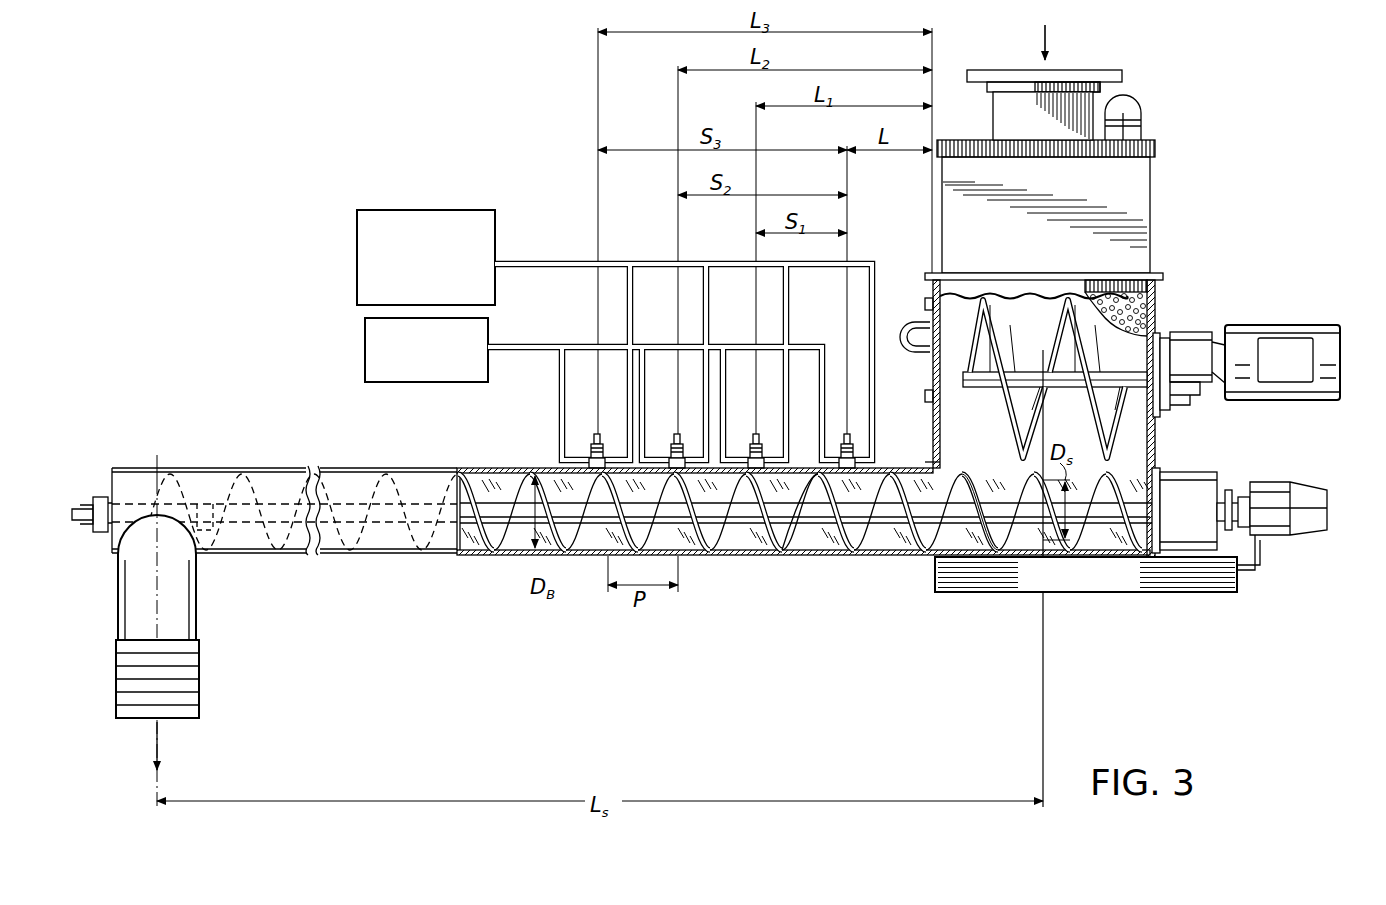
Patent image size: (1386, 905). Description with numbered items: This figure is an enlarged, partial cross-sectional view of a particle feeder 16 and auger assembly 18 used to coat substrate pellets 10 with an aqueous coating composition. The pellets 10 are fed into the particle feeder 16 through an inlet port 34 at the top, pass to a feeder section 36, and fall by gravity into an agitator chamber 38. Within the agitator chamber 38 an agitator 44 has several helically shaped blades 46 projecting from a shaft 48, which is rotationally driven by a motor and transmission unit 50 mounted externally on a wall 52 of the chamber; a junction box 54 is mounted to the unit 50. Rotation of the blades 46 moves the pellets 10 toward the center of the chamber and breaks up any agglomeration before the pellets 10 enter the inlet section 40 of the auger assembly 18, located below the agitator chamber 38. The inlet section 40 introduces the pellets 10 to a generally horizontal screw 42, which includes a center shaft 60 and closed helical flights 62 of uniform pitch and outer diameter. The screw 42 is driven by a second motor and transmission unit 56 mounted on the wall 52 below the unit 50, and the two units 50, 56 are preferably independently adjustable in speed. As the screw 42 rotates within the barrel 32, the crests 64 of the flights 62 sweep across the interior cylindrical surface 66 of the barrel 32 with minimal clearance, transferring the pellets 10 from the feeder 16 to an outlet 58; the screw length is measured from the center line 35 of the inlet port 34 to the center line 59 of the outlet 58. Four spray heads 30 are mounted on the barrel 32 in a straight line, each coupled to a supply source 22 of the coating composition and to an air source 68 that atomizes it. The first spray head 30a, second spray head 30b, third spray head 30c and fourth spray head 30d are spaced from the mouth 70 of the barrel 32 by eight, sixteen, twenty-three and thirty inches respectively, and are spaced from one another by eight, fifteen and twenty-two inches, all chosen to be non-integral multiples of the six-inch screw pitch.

The substrate pellets 10 is at (1152, 303).
The substrate pellet feeder 16 is at (1068, 291).
The auger assembly 18 is at (807, 524).
The supply source of the aqueous coating composition 22 is at (400, 210).
The spray heads 30 is at (680, 424).
The first spray head 30a is at (850, 440).
The second spray head 30b is at (759, 440).
The third spray head 30c is at (680, 440).
The fourth spray head 30d is at (600, 440).
The barrel 32 is at (396, 466).
The inlet port 34 is at (1064, 71).
The center line of the inlet port 35 is at (1043, 690).
The feeder section 36 is at (1064, 192).
The agitator chamber 38 is at (1044, 327).
The inlet section 40 is at (1003, 490).
The screw 42 is at (880, 560).
The agitator 44 is at (1117, 438).
The helically shaped blades 46 is at (984, 296).
The shaft 48 is at (1052, 388).
The motor and transmission unit 50 is at (1282, 343).
The wall 52 is at (1185, 331).
The junction box 54 is at (1298, 372).
The motor and transmission unit 56 is at (1206, 508).
The outlet 58 is at (198, 620).
The center line of the outlet 59 is at (157, 458).
The center shaft 60 is at (472, 555).
The helical flights 62 is at (762, 552).
The crests 64 is at (720, 552).
The interior cylindrical surface 66 is at (812, 552).
The air source 68 is at (488, 331).
The mouth 70 is at (940, 470).